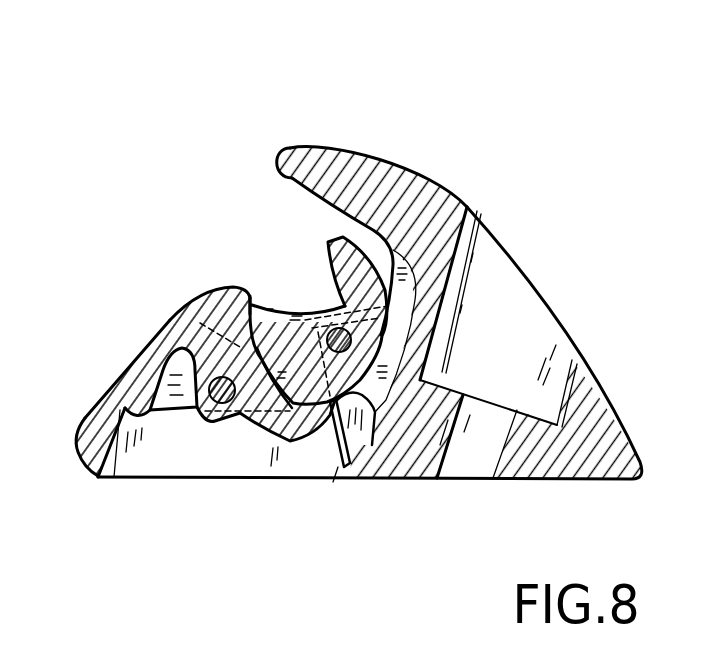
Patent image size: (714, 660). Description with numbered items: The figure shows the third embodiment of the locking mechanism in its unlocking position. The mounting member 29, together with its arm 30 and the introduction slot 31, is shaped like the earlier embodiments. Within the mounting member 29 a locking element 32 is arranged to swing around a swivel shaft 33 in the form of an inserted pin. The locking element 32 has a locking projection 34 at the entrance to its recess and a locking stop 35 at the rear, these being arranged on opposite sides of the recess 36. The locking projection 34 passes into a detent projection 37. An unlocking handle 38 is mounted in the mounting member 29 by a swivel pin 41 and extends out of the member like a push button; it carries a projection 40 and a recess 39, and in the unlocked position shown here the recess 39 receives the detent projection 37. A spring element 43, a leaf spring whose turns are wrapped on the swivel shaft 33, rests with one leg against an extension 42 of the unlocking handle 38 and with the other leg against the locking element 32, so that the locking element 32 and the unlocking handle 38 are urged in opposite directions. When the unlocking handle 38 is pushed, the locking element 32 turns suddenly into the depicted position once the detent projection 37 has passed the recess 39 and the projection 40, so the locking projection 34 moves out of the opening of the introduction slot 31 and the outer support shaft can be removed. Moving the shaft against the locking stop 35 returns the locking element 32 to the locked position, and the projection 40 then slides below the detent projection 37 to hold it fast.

The mounting member 29 is at (572, 480).
The arm 30 is at (297, 148).
The introduction slot 31 is at (307, 227).
The locking element 32 is at (436, 205).
The swivel shaft 33 is at (354, 344).
The locking projection 34 is at (275, 312).
The locking stop 35 is at (337, 237).
The recess 36 is at (335, 303).
The detent projection 37 is at (213, 300).
The unlocking handle 38 is at (127, 367).
The recess 39 is at (203, 323).
The projection 40 is at (246, 298).
The swivel pin 41 is at (207, 413).
The extension 42 is at (304, 441).
The spring element 43 is at (336, 480).